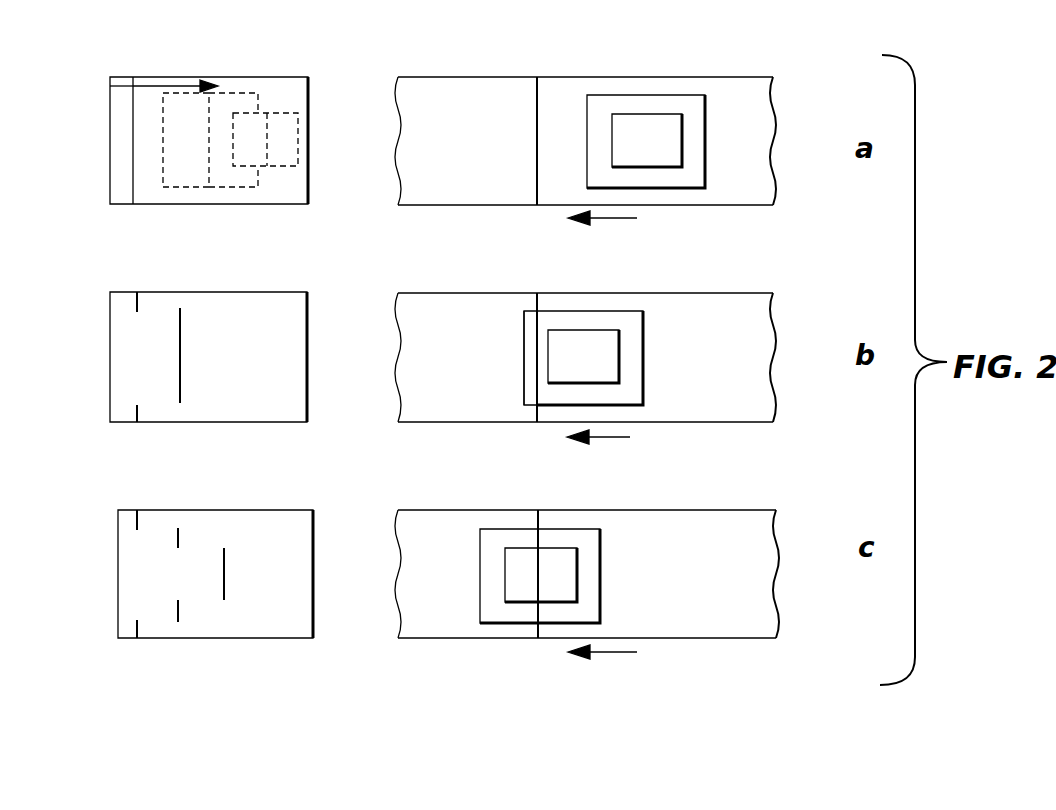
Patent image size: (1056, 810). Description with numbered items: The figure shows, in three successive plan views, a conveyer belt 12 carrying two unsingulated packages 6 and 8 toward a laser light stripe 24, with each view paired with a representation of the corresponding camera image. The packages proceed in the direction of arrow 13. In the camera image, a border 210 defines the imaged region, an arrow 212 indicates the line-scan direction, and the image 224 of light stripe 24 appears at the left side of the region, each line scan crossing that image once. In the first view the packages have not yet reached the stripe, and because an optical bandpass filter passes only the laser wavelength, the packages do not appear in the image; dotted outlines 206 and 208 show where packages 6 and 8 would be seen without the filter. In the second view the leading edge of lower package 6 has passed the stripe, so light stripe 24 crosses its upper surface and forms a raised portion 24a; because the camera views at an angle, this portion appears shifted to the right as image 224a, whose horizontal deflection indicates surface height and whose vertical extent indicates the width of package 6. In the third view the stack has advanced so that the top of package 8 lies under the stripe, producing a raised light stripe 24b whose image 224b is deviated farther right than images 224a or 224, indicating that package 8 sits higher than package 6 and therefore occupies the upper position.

In FIG. 2a, the package 6 is at (705, 140).
In FIG. 2b, the package 6 is at (630, 340).
In FIG. 2c, the package 6 is at (600, 568).
In FIG. 2a, the package 8 is at (615, 128).
In FIG. 2b, the package 8 is at (590, 335).
In FIG. 2c, the package 8 is at (515, 594).
In FIG. 2a, the conveyer belt 12 is at (762, 190).
In FIG. 2b, the conveyer belt 12 is at (750, 392).
In FIG. 2c, the conveyer belt 12 is at (752, 608).
In FIG. 2a, the arrow 13 is at (607, 220).
In FIG. 2b, the arrow 13 is at (617, 438).
In FIG. 2c, the arrow 13 is at (613, 653).
In FIG. 2a, the light stripe 24 is at (537, 175).
In FIG. 2b, the light stripe 24 is at (537, 302).
In FIG. 2c, the light stripe 24 is at (545, 520).
In FIG. 2b, the raised portion of light stripe 24a is at (524, 355).
In FIG. 2c, the raised portion of light stripe 24a is at (523, 538).
In FIG. 2c, the raised light stripe 24b is at (540, 565).
In FIG. 2a, the dotted outline 206 is at (184, 190).
In FIG. 2a, the dotted outline 208 is at (273, 168).
In FIG. 2a, the border 210 is at (308, 98).
In FIG. 2b, the border 210 is at (297, 373).
In FIG. 2c, the border 210 is at (303, 575).
In FIG. 2a, the arrow 212 is at (172, 86).
In FIG. 2a, the image of light stripe 224 is at (133, 125).
In FIG. 2b, the image of light stripe 224 is at (137, 300).
In FIG. 2c, the image of light stripe 224 is at (137, 520).
In FIG. 2b, the image of raised light stripe portion 224a is at (180, 343).
In FIG. 2c, the image of raised light stripe portion 224a is at (178, 530).
In FIG. 2c, the image of raised light stripe 224b is at (224, 577).